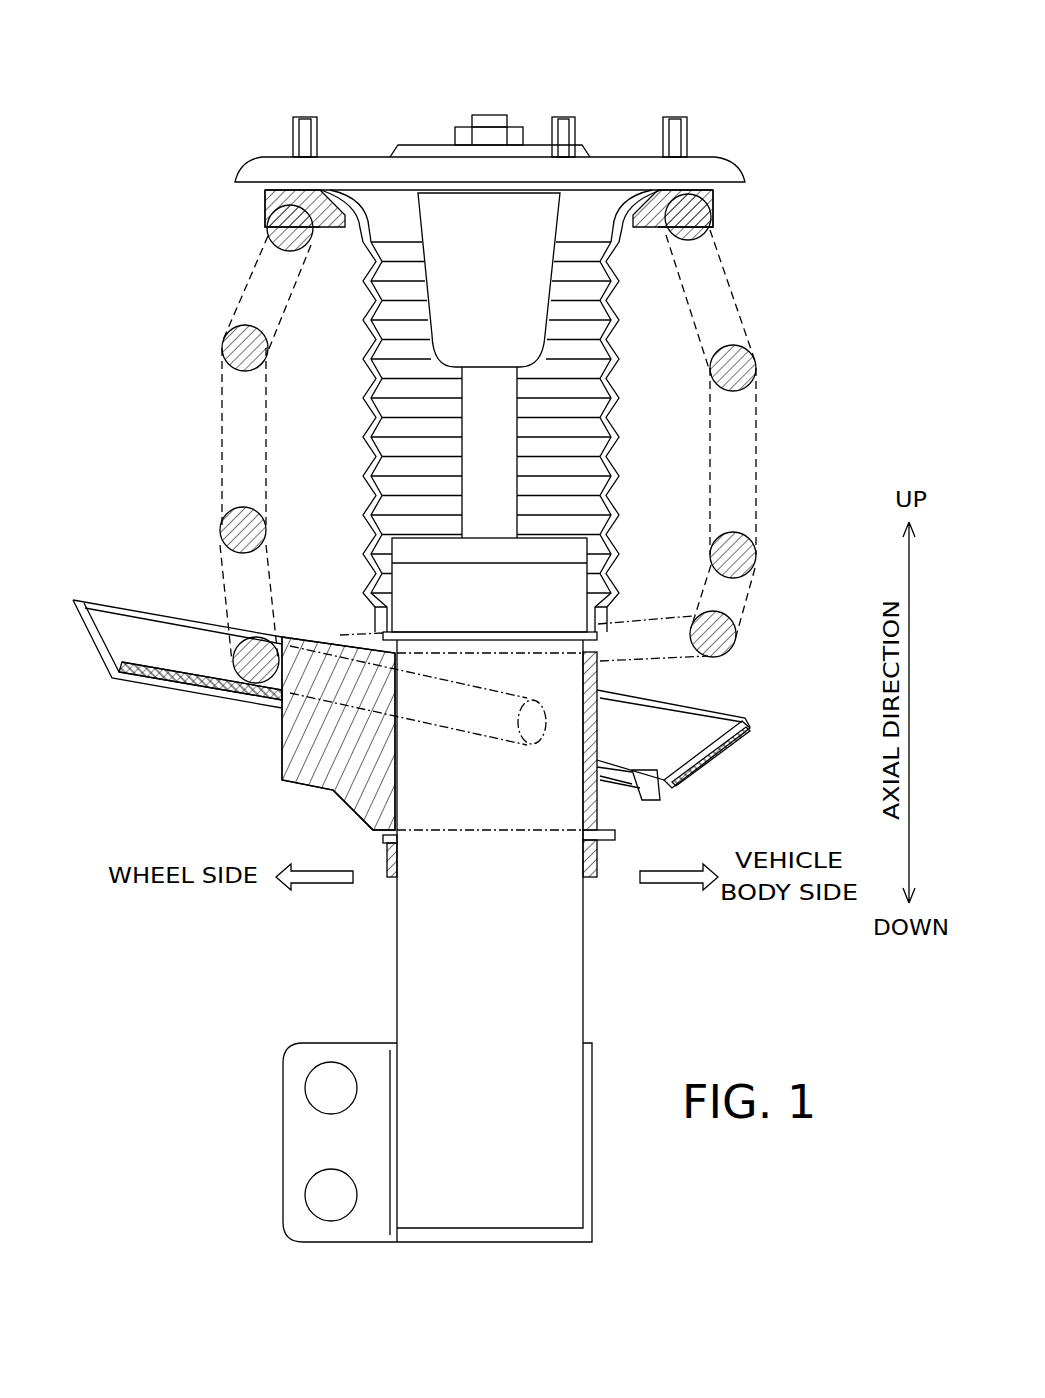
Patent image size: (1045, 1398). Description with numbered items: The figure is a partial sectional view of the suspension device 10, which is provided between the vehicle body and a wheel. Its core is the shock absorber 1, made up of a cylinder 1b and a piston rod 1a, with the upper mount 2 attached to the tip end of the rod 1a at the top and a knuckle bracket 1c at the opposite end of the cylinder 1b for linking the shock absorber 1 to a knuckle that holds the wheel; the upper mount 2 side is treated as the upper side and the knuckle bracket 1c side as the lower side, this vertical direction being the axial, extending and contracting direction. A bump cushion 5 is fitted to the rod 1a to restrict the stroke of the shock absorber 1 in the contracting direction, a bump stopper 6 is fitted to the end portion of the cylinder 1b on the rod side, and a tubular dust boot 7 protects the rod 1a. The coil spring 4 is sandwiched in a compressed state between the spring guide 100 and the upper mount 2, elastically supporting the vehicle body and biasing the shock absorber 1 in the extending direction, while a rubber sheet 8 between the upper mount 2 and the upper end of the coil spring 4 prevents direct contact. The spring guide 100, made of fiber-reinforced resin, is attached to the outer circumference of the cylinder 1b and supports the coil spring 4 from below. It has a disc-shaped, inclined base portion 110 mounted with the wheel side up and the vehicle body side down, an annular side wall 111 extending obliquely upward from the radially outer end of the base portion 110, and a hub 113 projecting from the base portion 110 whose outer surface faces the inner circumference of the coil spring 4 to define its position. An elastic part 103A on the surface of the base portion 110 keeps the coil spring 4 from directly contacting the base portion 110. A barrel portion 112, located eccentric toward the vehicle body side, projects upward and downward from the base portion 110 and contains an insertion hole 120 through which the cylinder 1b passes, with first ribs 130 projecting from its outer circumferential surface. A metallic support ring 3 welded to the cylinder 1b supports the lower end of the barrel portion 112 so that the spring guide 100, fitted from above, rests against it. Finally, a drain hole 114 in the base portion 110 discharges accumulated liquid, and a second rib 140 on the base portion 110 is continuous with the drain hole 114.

The suspension device 10 is at (215, 102).
The upper mount 2 is at (712, 180).
The rubber sheet 8 is at (282, 198).
The bump cushion 5 is at (423, 293).
The dust boot 7 is at (365, 405).
The piston rod 1a is at (505, 440).
The bump stopper 6 is at (595, 548).
The coil spring 4 is at (745, 562).
The elastic part 103A is at (175, 662).
The first ribs 130 is at (330, 737).
The side wall 111 is at (93, 647).
The base portion 110 is at (138, 688).
The hub 113 is at (282, 732).
The insertion hole 120 is at (390, 798).
The barrel portion 112 is at (600, 684).
The drain hole 114 is at (640, 775).
The spring guide 100 is at (762, 723).
The second rib 140 is at (665, 790).
The support ring 3 is at (598, 870).
The cylinder 1b is at (530, 948).
The shock absorber 1 is at (395, 981).
The knuckle bracket 1c is at (285, 1068).